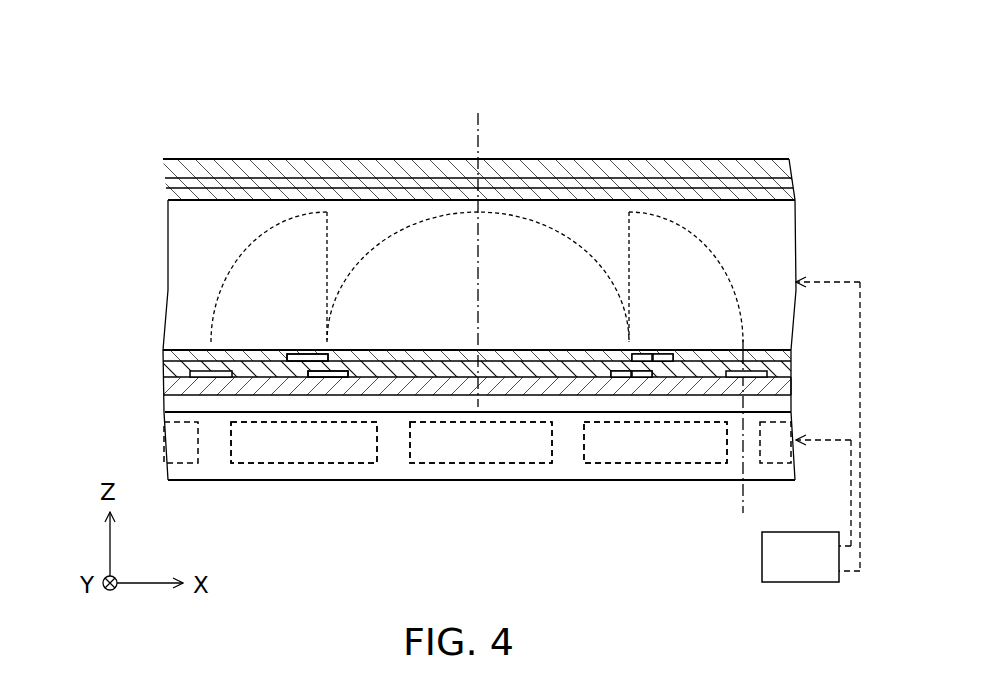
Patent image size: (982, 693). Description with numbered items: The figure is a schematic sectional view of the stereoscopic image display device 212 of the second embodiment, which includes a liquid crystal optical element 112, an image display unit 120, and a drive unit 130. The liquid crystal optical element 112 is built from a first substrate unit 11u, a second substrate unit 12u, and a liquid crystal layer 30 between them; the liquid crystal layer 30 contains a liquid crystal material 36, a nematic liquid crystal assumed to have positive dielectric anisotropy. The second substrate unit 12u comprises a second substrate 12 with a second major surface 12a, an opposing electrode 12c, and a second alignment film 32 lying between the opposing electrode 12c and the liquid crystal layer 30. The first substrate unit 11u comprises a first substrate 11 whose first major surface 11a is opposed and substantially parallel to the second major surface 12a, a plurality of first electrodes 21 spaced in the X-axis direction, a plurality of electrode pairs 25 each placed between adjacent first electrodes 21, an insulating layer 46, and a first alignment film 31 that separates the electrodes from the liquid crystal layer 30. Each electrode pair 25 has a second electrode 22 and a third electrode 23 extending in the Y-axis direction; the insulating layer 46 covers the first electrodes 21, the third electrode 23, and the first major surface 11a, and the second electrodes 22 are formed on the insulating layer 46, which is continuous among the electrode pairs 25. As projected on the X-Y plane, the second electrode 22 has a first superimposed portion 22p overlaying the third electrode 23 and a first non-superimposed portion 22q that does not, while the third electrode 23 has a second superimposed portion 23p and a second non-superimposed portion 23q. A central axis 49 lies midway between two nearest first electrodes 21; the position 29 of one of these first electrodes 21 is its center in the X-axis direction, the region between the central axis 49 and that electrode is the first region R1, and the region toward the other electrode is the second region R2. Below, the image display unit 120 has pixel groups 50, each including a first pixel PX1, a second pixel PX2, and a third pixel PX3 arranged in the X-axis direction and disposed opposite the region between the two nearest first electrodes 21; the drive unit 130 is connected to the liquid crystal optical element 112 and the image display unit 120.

The second substrate 12 is at (183, 170).
The opposing electrode 12c is at (180, 181).
The second substrate unit 12u is at (108, 123).
The second major surface 12a is at (760, 177).
The second alignment film 32 is at (180, 195).
The liquid crystal material 36 is at (185, 245).
The liquid crystal layer 30 is at (165, 270).
The first alignment film 31 is at (180, 356).
The insulating layer 46 is at (185, 370).
The first substrate 11 is at (180, 386).
The first substrate unit 11u is at (108, 275).
The first major surface 11a is at (790, 380).
The first electrode 21 is at (212, 372).
The second electrode 22 is at (304, 361).
The first superimposed portion 22p is at (645, 361).
The first non-superimposed portion 22q is at (667, 361).
The third electrode 23 is at (329, 377).
The second superimposed portion 23p is at (645, 377).
The second non-superimposed portion 23q is at (625, 377).
The electrode pair 25 is at (345, 540).
The position 29 is at (747, 508).
The central axis 49 is at (482, 125).
The pixel group 50 is at (575, 528).
The first pixel PX1 is at (375, 466).
The second pixel PX2 is at (466, 466).
The third pixel PX3 is at (584, 466).
The liquid crystal optical element 112 is at (728, 157).
The image display unit 120 is at (190, 483).
The drive unit 130 is at (800, 560).
The stereoscopic image display device 212 is at (620, 100).
The first region R1 is at (700, 120).
The second region R2 is at (343, 158).